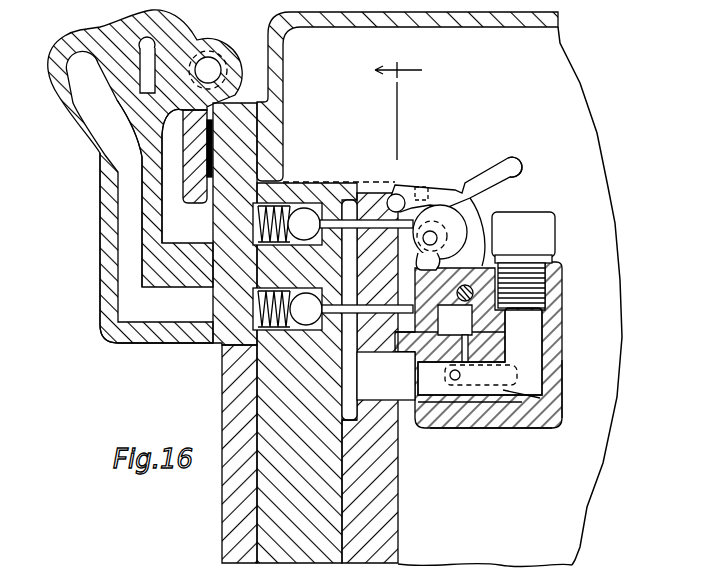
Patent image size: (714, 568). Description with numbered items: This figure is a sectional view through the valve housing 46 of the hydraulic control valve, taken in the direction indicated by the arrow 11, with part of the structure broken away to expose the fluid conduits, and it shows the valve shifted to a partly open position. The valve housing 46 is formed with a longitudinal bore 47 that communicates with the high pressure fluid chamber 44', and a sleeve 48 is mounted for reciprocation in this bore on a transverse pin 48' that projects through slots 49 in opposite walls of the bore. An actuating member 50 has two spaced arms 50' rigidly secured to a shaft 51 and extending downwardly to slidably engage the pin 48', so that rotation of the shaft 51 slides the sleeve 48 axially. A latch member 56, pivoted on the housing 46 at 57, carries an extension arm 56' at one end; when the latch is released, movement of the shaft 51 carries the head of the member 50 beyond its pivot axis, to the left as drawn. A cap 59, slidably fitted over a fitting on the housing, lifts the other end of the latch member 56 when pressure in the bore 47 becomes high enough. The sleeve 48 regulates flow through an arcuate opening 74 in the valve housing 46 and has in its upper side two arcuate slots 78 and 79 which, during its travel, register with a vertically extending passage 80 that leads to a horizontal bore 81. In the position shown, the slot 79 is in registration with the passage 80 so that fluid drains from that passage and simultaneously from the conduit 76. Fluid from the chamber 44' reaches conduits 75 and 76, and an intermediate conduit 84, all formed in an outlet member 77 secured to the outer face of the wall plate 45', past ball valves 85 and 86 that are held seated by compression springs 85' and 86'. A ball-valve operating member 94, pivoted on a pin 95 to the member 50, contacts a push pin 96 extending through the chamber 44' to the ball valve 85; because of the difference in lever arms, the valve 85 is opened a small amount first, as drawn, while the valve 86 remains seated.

The section line 11 is at (412, 111).
The high pressure fluid chamber 44' is at (390, 460).
The wall plate 45' is at (210, 333).
The valve housing 46 is at (398, 523).
The longitudinal bore 47 is at (522, 397).
The sleeve 48 is at (531, 428).
The transverse pin 48' is at (469, 418).
The slots 49 is at (553, 400).
The actuating member 50 is at (500, 219).
The spaced arms 50' is at (491, 435).
The shaft 51 is at (497, 257).
The latch member 56 is at (455, 204).
The extension arm 56' is at (340, 152).
The pivot 57 is at (398, 194).
The cap 59 is at (553, 222).
The arcuate opening 74 is at (398, 425).
The conduit 75 is at (105, 115).
The conduit 76 is at (160, 166).
The outlet member 77 is at (100, 220).
The arcuate slot 78 is at (523, 375).
The arcuate slot 79 is at (462, 348).
The vertically extending passage 80 is at (505, 338).
The horizontal bore 81 is at (413, 360).
The intermediate conduit 84 is at (157, 55).
The ball valve 85 is at (350, 186).
The compression spring 85' is at (287, 192).
The ball valve 86 is at (299, 353).
The compression spring 86' is at (248, 338).
The ball-valve operating member 94 is at (443, 178).
The pin 95 is at (434, 238).
The push pin 96 is at (440, 218).